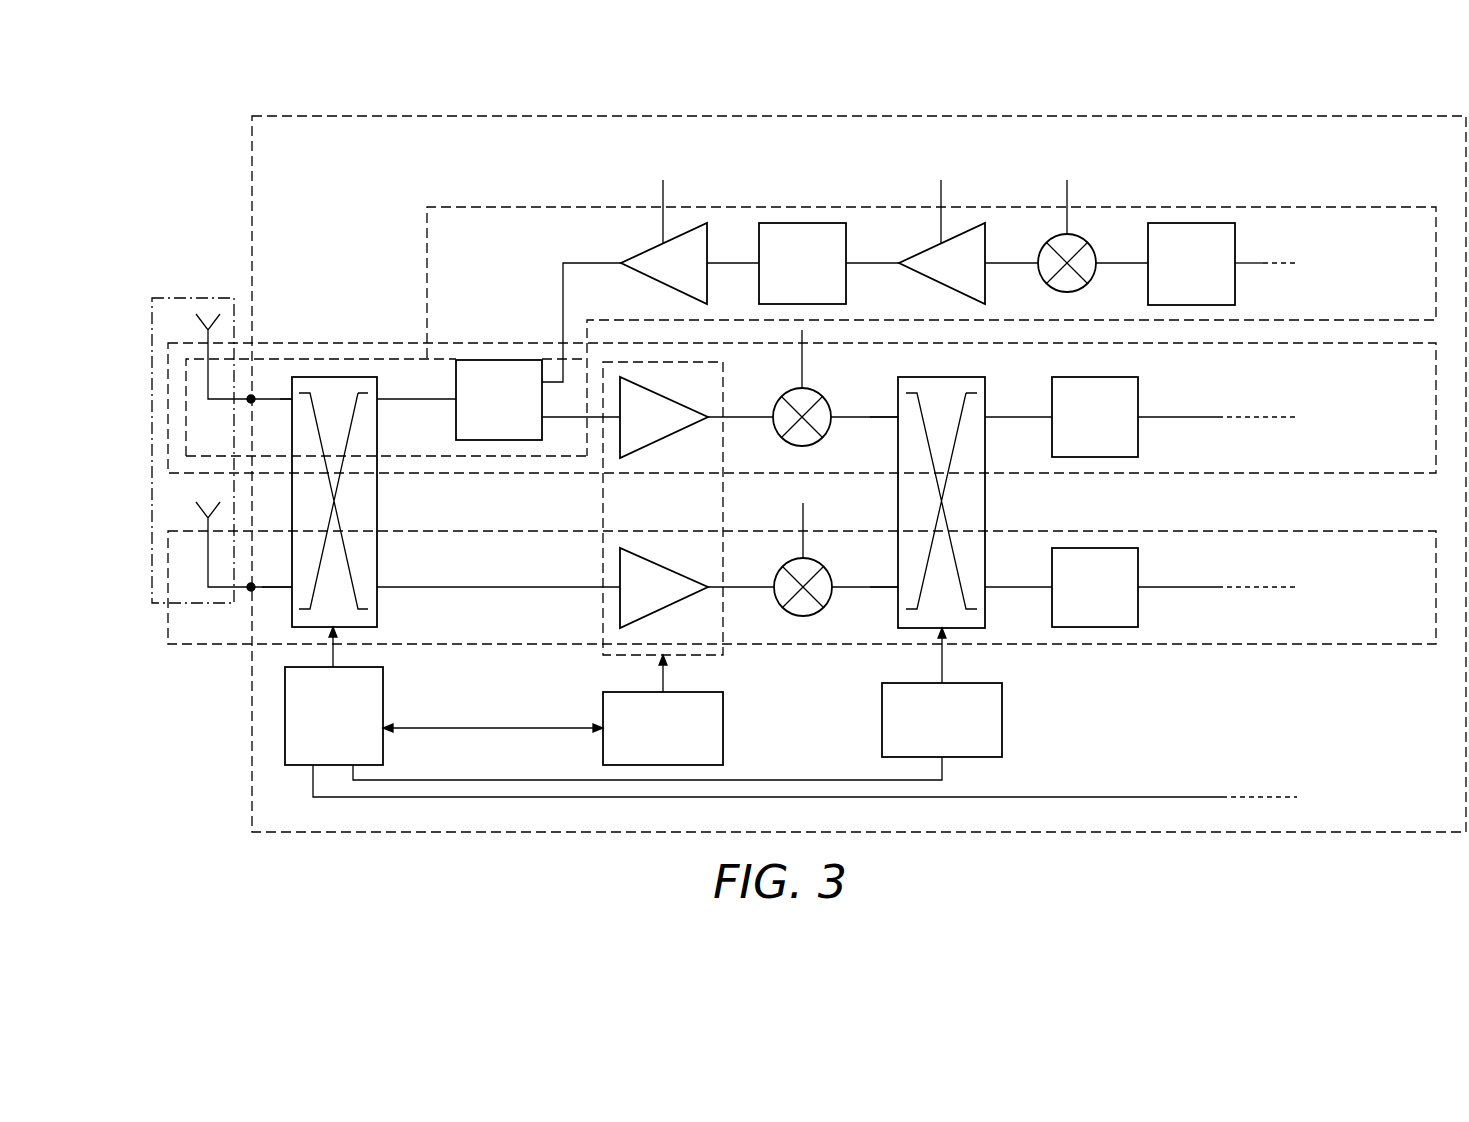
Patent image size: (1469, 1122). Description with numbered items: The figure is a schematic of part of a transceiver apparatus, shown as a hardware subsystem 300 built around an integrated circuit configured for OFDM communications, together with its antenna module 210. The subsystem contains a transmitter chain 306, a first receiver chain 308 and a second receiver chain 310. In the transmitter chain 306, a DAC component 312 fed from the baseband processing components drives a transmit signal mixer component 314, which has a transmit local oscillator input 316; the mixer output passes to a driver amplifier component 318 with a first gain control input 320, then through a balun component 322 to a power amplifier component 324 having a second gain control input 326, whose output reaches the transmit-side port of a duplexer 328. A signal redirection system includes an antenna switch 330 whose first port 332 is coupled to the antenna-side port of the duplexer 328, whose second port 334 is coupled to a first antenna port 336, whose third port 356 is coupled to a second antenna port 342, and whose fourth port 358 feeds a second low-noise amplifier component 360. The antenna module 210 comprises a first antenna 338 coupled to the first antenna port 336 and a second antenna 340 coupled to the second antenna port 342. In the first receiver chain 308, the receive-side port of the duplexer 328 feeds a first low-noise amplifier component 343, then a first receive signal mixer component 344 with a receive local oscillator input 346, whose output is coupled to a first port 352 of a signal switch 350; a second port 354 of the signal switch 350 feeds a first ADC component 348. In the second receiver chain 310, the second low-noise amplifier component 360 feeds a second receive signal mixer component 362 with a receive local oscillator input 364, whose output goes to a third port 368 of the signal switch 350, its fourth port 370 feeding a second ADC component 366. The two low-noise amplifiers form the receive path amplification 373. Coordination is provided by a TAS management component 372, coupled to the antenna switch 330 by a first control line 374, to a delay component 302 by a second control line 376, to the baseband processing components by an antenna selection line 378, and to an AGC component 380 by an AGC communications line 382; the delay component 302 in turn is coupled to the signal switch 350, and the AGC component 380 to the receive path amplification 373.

The hardware subsystem 300 is at (256, 114).
The antenna module 210 is at (155, 296).
The delay component 302 is at (942, 692).
The transmitter chain 306 is at (773, 204).
The first receiver chain 308 is at (1210, 476).
The second receiver chain 310 is at (1193, 645).
The Digital-to-Analogue Converter component 312 is at (1222, 264).
The transmit signal mixer component 314 is at (1080, 237).
The transmit local oscillator input 316 is at (1066, 190).
The driver amplifier component 318 is at (968, 263).
The first gain control input 320 is at (940, 190).
The balun component 322 is at (829, 263).
The power amplifier component 324 is at (690, 263).
The second gain control input 326 is at (662, 190).
The duplexer 328 is at (538, 351).
The antenna switch 330 is at (378, 500).
The first port 332 is at (381, 395).
The second port 334 is at (288, 395).
The first antenna port 336 is at (250, 402).
The first antenna 338 is at (208, 385).
The second antenna 340 is at (208, 574).
The second antenna port 342 is at (250, 592).
The first low-noise amplifier component 343 is at (696, 417).
The first receive signal mixer component 344 is at (784, 447).
The receive local oscillator input 346 is at (806, 358).
The first Analogue-to-Digital Converter component 348 is at (1174, 417).
The signal switch 350 is at (986, 503).
The first port 352 is at (897, 418).
The second port 354 is at (986, 416).
The third port 356 is at (285, 592).
The fourth port 358 is at (378, 586).
The second low-noise amplifier component 360 is at (697, 588).
The second receive signal mixer component 362 is at (805, 617).
The receive local oscillator input 364 is at (806, 518).
The second Analogue-to-Digital Converter component 366 is at (1174, 587).
The third port 368 is at (897, 587).
The fourth port 370 is at (986, 590).
The TAS management component 372 is at (334, 716).
The receive path amplification 373 is at (602, 508).
The first control line 374 is at (338, 651).
The second control line 376 is at (440, 780).
The antenna selection line 378 is at (1078, 797).
The Automatic Gain Control component 380 is at (663, 710).
The AGC communications line 382 is at (507, 727).